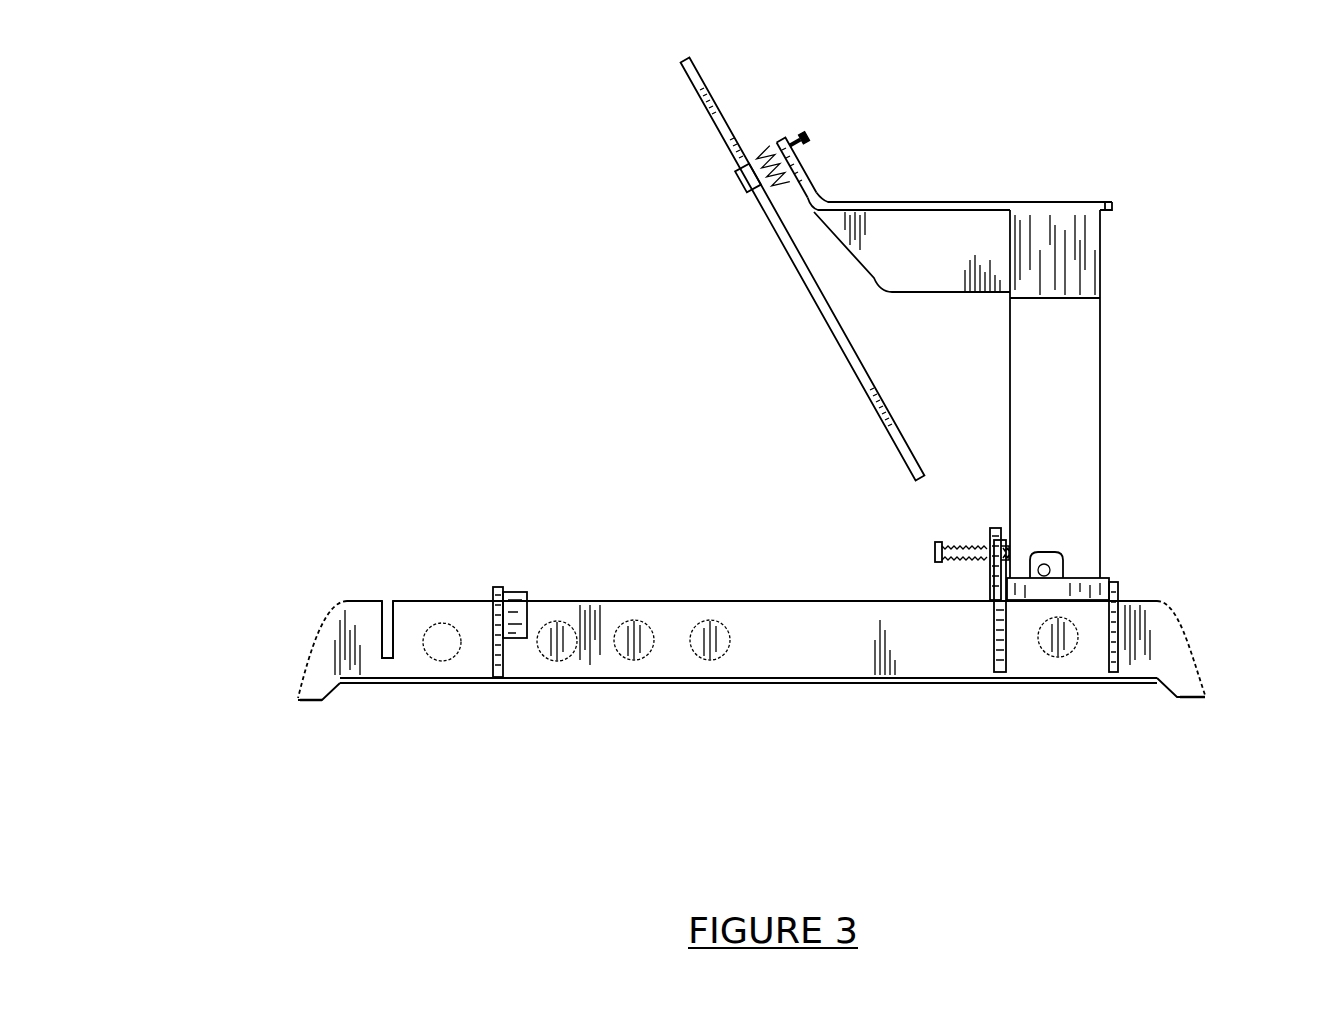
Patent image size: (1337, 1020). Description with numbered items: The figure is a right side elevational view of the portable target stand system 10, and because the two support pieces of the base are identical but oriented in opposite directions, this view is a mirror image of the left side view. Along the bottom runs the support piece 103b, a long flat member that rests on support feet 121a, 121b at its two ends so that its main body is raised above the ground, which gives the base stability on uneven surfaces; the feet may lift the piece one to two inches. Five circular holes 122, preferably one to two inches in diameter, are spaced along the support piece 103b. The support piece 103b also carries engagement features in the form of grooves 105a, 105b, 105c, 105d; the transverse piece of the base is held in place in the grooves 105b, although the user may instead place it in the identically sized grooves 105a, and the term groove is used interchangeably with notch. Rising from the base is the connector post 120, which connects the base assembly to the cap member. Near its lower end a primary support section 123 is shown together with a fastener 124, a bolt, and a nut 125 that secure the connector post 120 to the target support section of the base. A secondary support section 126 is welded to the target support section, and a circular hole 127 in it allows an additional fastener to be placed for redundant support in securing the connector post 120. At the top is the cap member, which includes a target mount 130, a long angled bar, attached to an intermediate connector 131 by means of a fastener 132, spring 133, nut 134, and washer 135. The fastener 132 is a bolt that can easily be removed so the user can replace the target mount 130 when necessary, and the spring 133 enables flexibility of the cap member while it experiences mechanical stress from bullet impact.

The portable target stand system 10 is at (800, 733).
The support piece 103b is at (823, 647).
The groove 105a is at (1117, 642).
The groove 105b is at (1000, 648).
The bracket 105c is at (493, 658).
The notch 105d is at (387, 650).
The connector post 120 is at (1076, 377).
The support foot 121a is at (1183, 672).
The support foot 121b is at (330, 687).
The circular holes 122 is at (443, 647).
The primary support section 123 is at (1005, 540).
The fastener 124 is at (933, 551).
The nut 125 is at (990, 538).
The secondary support section 126 is at (1052, 582).
The circular hole 127 is at (1047, 565).
The target mount 130 is at (713, 127).
The intermediate connector 131 is at (988, 210).
The fastener 132 is at (742, 182).
The spring 133 is at (753, 160).
The nut 134 is at (795, 156).
The washer 135 is at (788, 140).